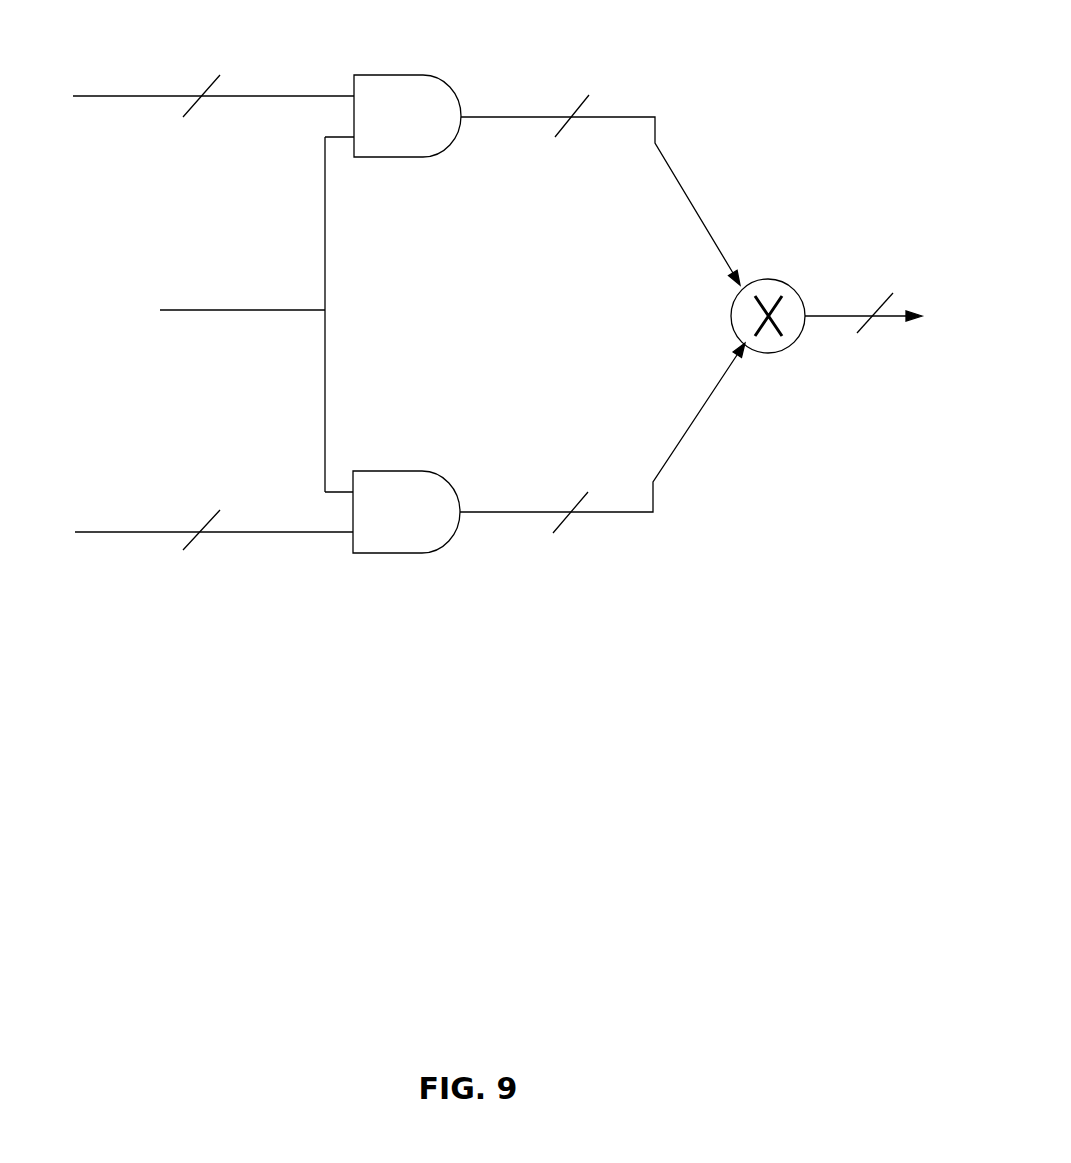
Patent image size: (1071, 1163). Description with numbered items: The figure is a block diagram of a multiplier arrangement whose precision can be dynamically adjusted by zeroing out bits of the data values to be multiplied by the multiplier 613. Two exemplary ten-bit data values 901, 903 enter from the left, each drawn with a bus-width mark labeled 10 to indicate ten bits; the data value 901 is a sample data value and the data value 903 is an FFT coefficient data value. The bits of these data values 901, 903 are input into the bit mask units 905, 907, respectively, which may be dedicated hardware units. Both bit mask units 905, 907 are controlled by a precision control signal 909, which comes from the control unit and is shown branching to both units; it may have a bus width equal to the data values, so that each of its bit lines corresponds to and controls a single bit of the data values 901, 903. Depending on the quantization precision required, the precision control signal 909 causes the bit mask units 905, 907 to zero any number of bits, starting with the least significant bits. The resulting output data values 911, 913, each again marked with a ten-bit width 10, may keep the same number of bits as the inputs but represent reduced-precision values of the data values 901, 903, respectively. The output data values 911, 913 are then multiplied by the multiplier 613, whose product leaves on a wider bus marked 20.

The data value 901 is at (88, 95).
The data value 903 is at (88, 531).
The bit mask unit 905 is at (397, 157).
The bit mask unit 907 is at (398, 471).
The precision control signal 909 is at (205, 310).
The output data value 911 is at (490, 116).
The output data value 913 is at (488, 512).
The multiplier 613 is at (785, 283).
The bus width 10 bits 10 is at (381, 328).
The bus width 20 bits 20 is at (869, 328).